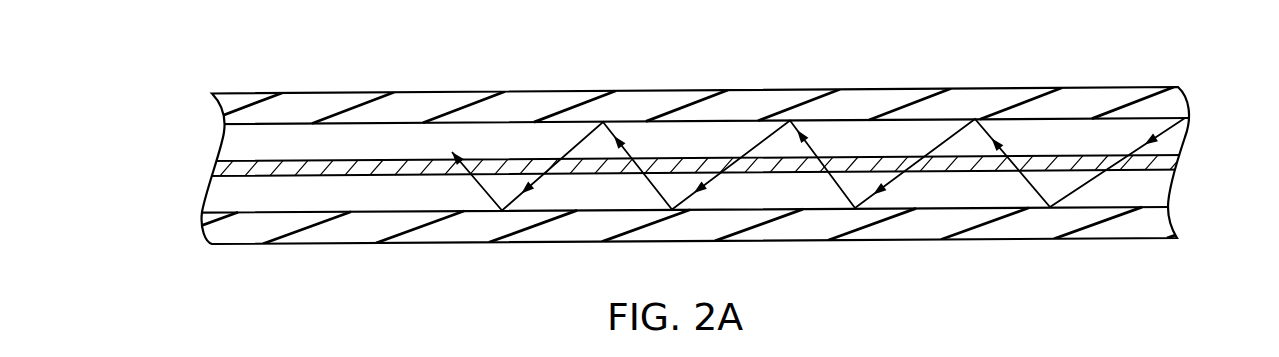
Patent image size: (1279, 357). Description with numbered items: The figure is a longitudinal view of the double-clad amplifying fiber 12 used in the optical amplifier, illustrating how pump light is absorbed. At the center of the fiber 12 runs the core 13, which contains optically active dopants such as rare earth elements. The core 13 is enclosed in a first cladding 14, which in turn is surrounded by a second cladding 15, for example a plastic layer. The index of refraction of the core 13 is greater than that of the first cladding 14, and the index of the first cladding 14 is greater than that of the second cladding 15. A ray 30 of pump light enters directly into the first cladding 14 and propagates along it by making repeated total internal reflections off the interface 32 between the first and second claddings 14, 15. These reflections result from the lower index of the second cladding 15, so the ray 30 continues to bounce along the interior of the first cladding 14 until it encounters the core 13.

The amplifying fiber 12 is at (714, 203).
The core 13 is at (692, 165).
The first cladding 14 is at (320, 151).
The second cladding 15 is at (702, 226).
The ray 30 is at (818, 164).
The interface 32 is at (714, 165).